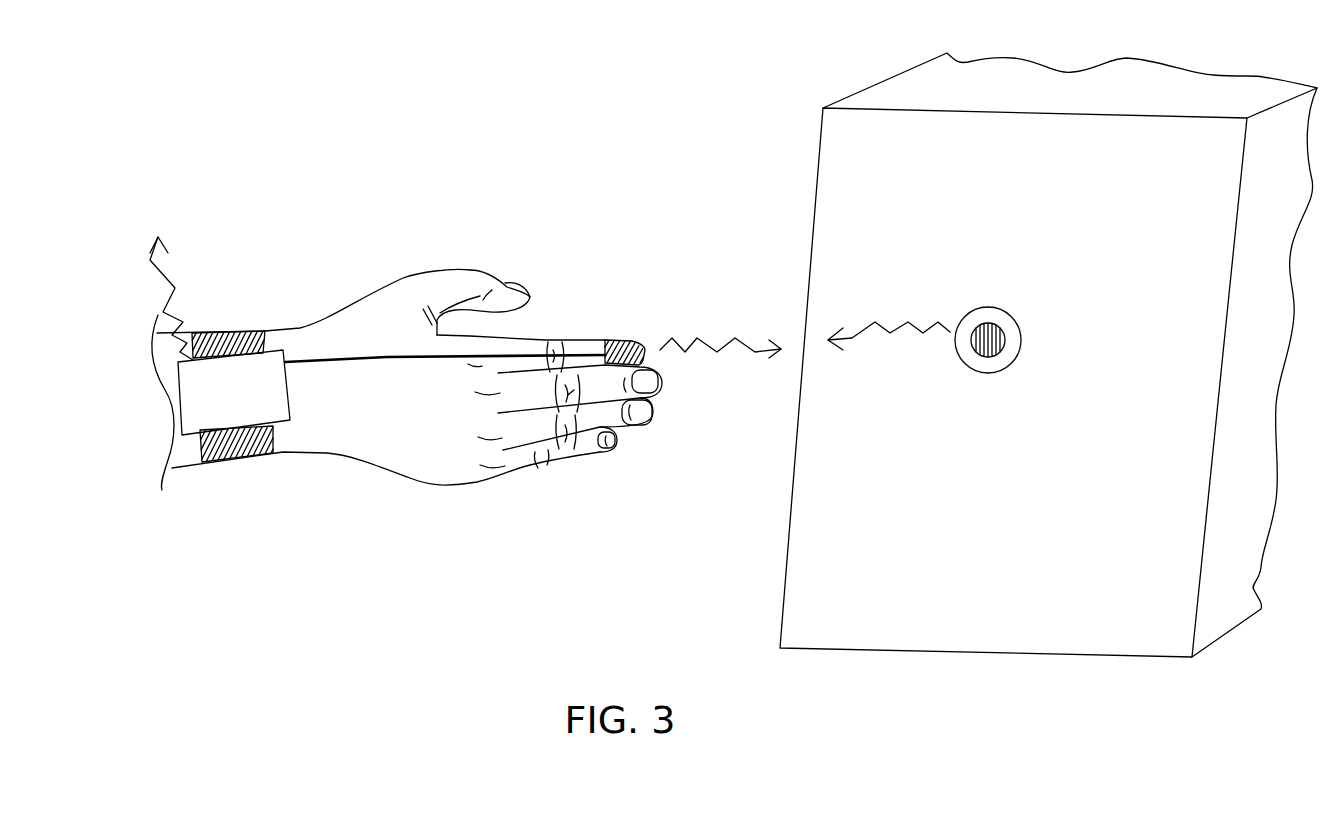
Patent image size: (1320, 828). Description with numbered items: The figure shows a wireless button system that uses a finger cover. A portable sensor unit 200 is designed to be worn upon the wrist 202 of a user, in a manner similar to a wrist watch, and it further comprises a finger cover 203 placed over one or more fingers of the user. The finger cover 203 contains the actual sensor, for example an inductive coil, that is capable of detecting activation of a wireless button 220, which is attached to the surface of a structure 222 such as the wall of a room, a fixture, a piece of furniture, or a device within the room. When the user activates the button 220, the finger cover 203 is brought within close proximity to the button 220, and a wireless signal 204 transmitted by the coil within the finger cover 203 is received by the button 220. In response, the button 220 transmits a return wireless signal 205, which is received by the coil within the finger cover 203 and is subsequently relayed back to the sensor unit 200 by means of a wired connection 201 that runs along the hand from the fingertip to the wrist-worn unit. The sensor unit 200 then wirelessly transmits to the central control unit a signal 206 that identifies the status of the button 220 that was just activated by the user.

The portable sensor unit 200 is at (283, 427).
The wired connection 201 is at (387, 360).
The wrist 202 is at (297, 320).
The finger cover 203 is at (627, 337).
The wireless signal 204 is at (683, 347).
The return wireless signal 205 is at (880, 318).
The signal to central control unit 206 is at (177, 288).
The wireless button 220 is at (992, 307).
The structure 222 is at (970, 551).